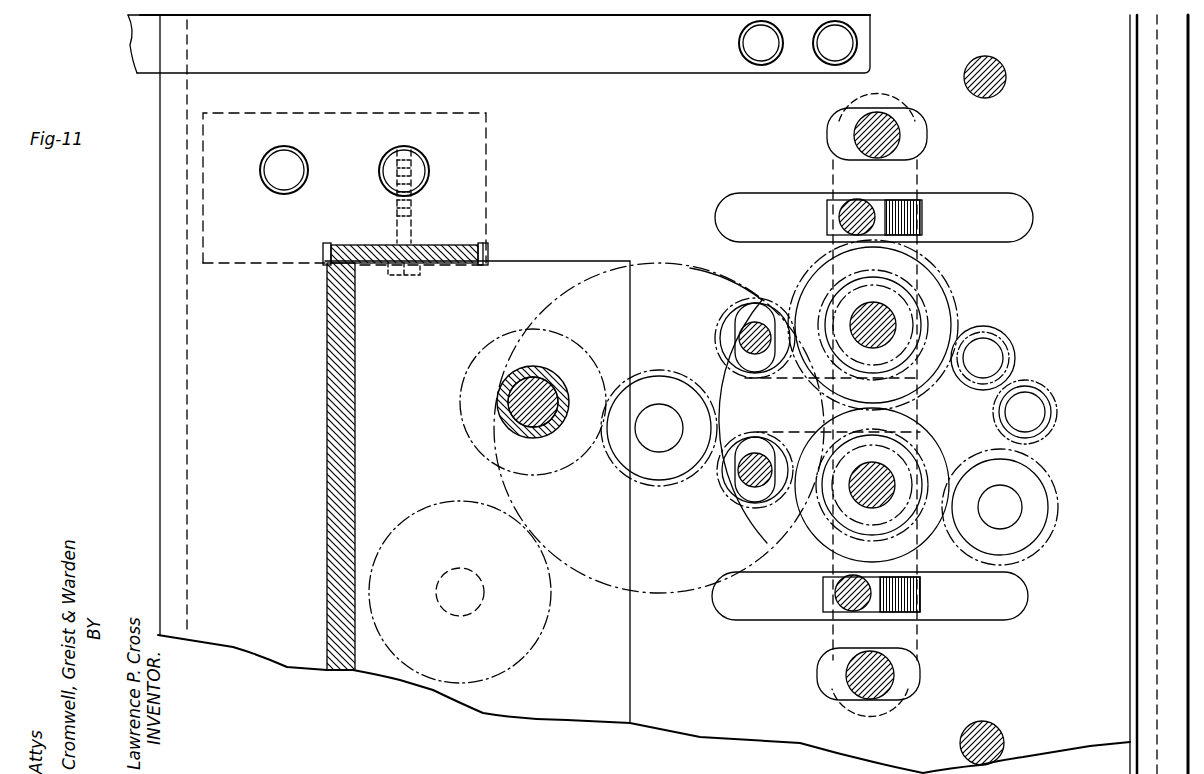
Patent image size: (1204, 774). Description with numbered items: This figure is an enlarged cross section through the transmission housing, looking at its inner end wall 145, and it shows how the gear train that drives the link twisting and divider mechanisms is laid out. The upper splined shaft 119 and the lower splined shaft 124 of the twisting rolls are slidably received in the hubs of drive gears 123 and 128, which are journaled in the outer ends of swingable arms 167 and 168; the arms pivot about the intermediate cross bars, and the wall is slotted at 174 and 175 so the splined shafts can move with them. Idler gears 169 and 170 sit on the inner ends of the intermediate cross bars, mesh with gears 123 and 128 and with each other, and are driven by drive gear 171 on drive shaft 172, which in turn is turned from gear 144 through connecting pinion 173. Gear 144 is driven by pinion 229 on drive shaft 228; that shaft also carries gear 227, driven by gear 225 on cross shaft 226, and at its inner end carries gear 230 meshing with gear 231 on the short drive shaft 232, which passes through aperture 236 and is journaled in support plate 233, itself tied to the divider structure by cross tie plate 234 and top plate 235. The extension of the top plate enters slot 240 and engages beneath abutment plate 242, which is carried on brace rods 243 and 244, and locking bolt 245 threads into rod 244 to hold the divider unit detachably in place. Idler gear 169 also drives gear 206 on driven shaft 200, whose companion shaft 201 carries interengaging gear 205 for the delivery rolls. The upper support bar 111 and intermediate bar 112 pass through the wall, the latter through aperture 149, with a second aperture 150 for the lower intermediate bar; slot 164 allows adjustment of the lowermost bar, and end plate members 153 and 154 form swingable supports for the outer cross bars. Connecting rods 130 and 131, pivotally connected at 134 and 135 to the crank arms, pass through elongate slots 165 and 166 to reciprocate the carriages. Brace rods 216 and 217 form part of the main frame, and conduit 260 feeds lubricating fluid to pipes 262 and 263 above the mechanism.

The support bar 111 is at (880, 128).
The support bar 112 is at (875, 695).
The splined shaft 119 is at (733, 338).
The drive gear 123 is at (716, 333).
The splined shaft 124 is at (731, 478).
The drive gear 128 is at (765, 442).
The connecting rod 130 is at (840, 218).
The connecting rod 131 is at (838, 594).
The pivotal connection 134 is at (922, 210).
The pivotal connection 135 is at (920, 586).
The drive gear 144 is at (942, 303).
The inner end wall 145 is at (718, 735).
The aperture 149 is at (866, 312).
The aperture 150 is at (866, 458).
The end plate member 153 is at (910, 146).
The end plate member 154 is at (915, 636).
The slot 164 is at (918, 684).
The elongate slot 165 is at (948, 242).
The elongate slot 166 is at (948, 621).
The arm or plate member 167 is at (797, 286).
The arm or plate member 168 is at (800, 438).
The idler gear 169 is at (921, 381).
The idler gear 170 is at (917, 422).
The drive gear 171 is at (1040, 481).
The drive shaft 172 is at (1006, 484).
The connecting pinion 173 is at (1055, 530).
The slot 174 is at (742, 376).
The slot 175 is at (742, 503).
The driven shaft 200 is at (990, 356).
The driven shaft 201 is at (1023, 408).
The gear 205 is at (1056, 414).
The gear 206 is at (1013, 354).
The top brace rod 216 is at (1006, 77).
The brace rod 217 is at (995, 732).
The gear 225 is at (552, 604).
The cross shaft 226 is at (484, 588).
The gear 227 is at (648, 596).
The drive shaft 228 is at (647, 458).
The pinion 229 is at (676, 374).
The gear 230 is at (616, 476).
The gear 231 is at (462, 430).
The drive shaft 232 is at (528, 382).
The support plate 233 is at (522, 270).
The cross tie plate 234 is at (327, 382).
The top plate 235 is at (435, 262).
The aperture 236 is at (518, 440).
The slot 240 is at (465, 243).
The abutment plate 242 is at (488, 142).
The brace rod 243 is at (283, 160).
The brace rod 244 is at (392, 160).
The locking bolt 245 is at (412, 215).
The conduit 260 is at (622, 73).
The pipe 262 is at (739, 44).
The pipe 263 is at (857, 43).